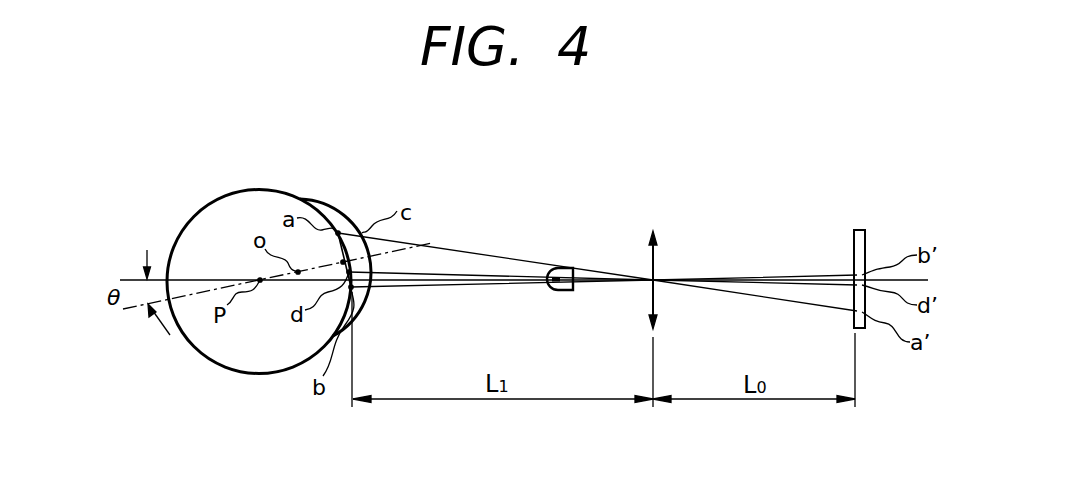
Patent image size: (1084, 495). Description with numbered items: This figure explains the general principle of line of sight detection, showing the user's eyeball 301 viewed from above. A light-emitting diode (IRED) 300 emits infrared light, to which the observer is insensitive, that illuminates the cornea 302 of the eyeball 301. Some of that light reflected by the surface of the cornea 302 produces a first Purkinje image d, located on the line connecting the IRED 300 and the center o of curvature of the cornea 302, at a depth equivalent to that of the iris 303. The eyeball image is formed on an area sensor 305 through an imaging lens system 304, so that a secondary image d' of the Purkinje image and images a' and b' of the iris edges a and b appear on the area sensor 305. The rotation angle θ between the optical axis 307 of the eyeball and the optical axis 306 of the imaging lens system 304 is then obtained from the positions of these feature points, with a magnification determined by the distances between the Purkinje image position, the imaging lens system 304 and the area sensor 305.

The light-emitting diode (IRED) 300 is at (560, 290).
The eyeball 301 is at (252, 189).
The cornea 302 is at (348, 221).
The iris 303 is at (337, 230).
The imaging lens system 304 is at (662, 255).
The area sensor 305 is at (858, 230).
The optical axis of the imaging lens system 306 is at (140, 278).
The optical axis of the eyeball 307 is at (438, 242).